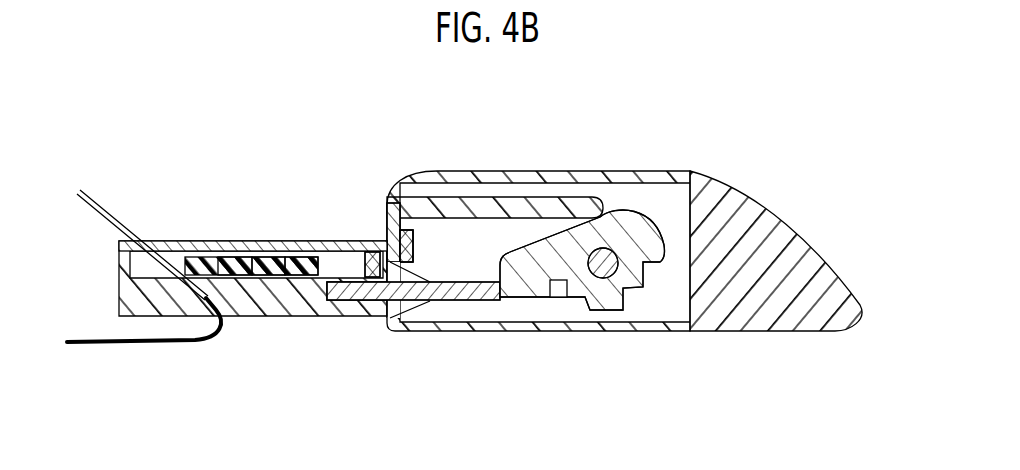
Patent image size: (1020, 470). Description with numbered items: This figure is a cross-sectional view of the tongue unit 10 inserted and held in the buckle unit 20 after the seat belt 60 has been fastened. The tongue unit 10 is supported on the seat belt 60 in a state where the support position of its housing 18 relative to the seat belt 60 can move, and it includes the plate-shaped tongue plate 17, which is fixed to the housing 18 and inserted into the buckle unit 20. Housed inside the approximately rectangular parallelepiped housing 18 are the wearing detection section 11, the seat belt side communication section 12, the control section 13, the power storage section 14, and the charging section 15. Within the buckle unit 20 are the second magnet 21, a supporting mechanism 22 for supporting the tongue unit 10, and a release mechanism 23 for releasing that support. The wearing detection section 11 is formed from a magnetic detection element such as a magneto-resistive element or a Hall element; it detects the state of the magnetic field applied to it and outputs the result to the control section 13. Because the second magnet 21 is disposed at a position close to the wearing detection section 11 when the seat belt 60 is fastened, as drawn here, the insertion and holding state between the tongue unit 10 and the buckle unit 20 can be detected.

The tongue unit 10 is at (309, 335).
The wearing detection section 11 is at (368, 262).
The seat belt side communication section 12 is at (232, 257).
The control section 13 is at (235, 266).
The power storage section 14 is at (268, 266).
The charging section 15 is at (301, 266).
The tongue plate 17 is at (362, 297).
The housing 18 is at (235, 303).
The buckle unit 20 is at (567, 179).
The second magnet 21 is at (400, 200).
The supporting mechanism 22 is at (605, 300).
The release mechanism 23 is at (488, 205).
The seat belt 60 is at (130, 236).